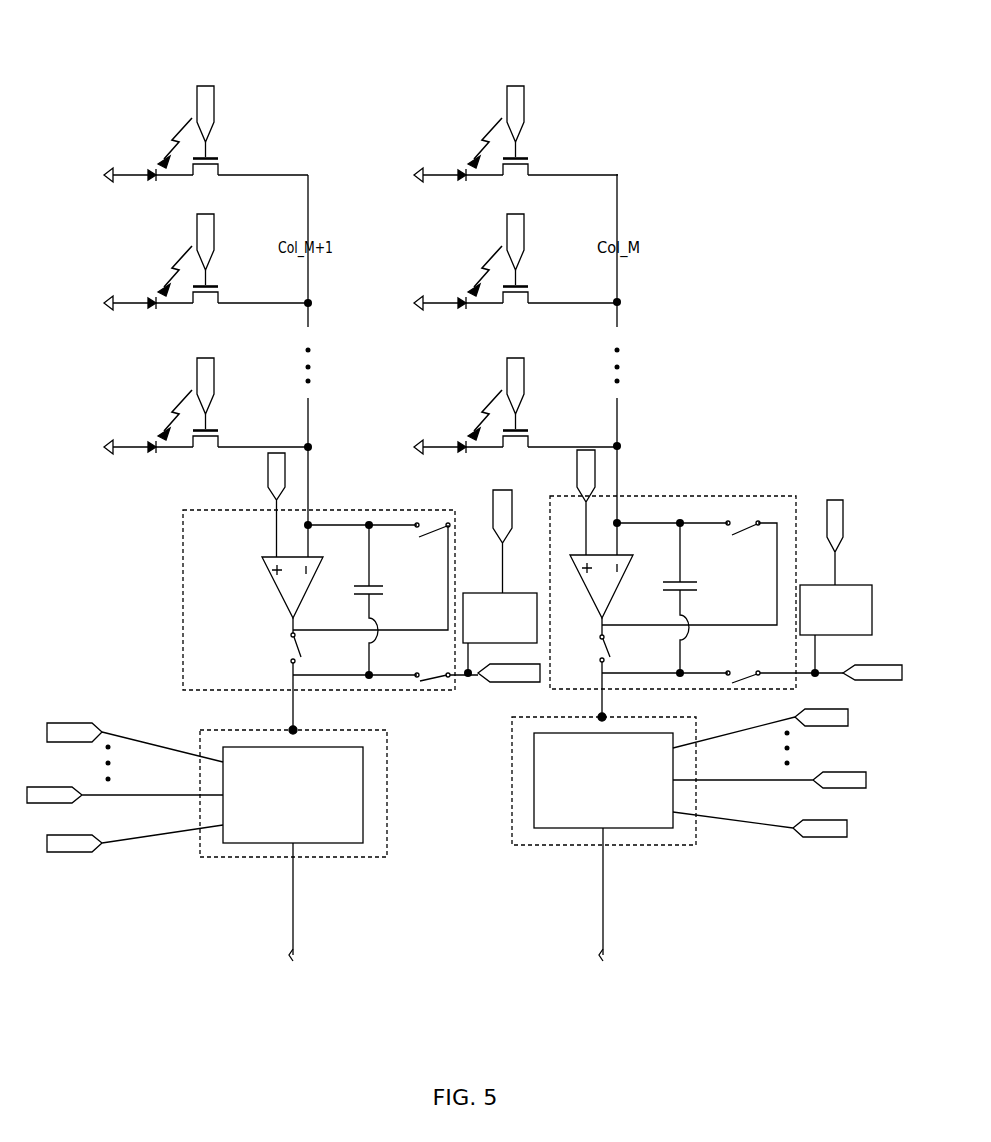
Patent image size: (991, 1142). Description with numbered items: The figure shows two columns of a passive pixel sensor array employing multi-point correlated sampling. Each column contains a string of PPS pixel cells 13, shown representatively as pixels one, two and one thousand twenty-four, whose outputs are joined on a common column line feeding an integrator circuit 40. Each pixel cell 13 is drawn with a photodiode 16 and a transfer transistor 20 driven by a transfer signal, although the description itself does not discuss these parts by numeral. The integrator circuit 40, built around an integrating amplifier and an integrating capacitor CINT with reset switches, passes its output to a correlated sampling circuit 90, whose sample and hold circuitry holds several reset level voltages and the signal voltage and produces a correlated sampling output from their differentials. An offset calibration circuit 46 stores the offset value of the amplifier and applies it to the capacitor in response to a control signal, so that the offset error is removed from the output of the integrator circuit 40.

The PPS pixel cell 13 is at (103, 95).
The photodiode 16 is at (140, 167).
The transfer transistor 20 is at (242, 158).
The integrator circuit 40 is at (520, 589).
The offset calibration circuit 46 is at (667, 581).
The correlated sampling circuit 90 is at (192, 733).